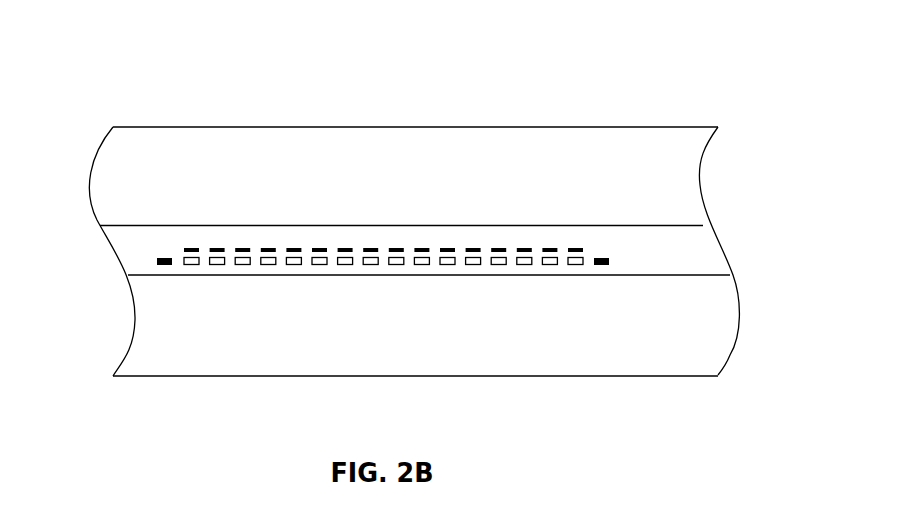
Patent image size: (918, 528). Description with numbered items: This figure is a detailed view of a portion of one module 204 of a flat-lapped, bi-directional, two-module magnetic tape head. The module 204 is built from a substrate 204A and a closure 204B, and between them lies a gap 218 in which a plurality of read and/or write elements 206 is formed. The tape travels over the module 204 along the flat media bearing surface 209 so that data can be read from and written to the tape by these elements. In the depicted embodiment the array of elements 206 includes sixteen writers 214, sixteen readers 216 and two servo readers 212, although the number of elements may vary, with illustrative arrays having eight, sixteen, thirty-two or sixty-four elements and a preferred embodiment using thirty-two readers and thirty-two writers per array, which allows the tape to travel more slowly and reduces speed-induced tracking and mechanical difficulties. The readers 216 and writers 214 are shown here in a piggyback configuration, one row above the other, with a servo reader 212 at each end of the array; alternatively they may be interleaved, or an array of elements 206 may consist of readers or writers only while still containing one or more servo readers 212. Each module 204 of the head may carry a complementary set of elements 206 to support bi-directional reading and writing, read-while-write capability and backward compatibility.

The module 204 is at (127, 100).
The substrate 204A is at (215, 127).
The closure 204B is at (267, 376).
The media bearing surface 209 is at (343, 193).
The read and/or write elements 206 is at (636, 247).
The servo readers 212 is at (157, 260).
The writers 214 is at (498, 247).
The readers 216 is at (502, 265).
The gap 218 is at (718, 248).